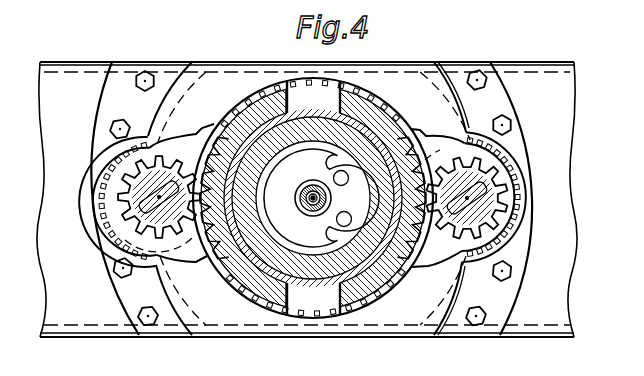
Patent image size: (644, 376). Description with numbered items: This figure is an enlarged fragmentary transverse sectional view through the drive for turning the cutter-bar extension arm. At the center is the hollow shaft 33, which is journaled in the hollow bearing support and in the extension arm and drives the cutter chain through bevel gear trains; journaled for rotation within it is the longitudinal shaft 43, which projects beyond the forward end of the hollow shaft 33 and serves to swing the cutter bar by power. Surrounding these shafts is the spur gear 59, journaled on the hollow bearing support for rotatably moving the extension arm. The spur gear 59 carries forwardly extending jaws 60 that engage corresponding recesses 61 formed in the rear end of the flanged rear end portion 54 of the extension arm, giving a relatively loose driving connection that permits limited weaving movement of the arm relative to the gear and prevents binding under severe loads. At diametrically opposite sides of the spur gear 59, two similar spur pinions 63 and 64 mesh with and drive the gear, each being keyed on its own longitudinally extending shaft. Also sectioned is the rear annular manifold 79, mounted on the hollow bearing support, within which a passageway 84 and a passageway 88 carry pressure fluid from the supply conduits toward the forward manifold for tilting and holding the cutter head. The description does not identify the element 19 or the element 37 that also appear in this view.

The housing plate 19 is at (230, 338).
The hollow shaft 33 is at (304, 178).
The flange 37 is at (112, 107).
The longitudinal shaft 43 is at (314, 217).
The flanged rear end portion 54 is at (352, 318).
The spur gear 59 is at (176, 132).
The jaws 60 is at (323, 81).
The recesses 61 is at (297, 80).
The spur pinion 63 is at (522, 182).
The spur pinion 64 is at (120, 223).
The annular manifold 79 is at (354, 150).
The passageway 84 is at (344, 186).
The passageway 88 is at (353, 214).